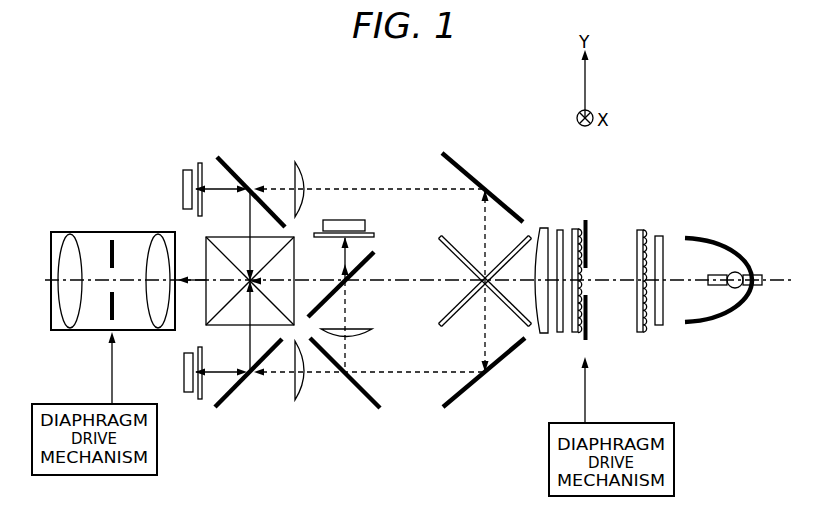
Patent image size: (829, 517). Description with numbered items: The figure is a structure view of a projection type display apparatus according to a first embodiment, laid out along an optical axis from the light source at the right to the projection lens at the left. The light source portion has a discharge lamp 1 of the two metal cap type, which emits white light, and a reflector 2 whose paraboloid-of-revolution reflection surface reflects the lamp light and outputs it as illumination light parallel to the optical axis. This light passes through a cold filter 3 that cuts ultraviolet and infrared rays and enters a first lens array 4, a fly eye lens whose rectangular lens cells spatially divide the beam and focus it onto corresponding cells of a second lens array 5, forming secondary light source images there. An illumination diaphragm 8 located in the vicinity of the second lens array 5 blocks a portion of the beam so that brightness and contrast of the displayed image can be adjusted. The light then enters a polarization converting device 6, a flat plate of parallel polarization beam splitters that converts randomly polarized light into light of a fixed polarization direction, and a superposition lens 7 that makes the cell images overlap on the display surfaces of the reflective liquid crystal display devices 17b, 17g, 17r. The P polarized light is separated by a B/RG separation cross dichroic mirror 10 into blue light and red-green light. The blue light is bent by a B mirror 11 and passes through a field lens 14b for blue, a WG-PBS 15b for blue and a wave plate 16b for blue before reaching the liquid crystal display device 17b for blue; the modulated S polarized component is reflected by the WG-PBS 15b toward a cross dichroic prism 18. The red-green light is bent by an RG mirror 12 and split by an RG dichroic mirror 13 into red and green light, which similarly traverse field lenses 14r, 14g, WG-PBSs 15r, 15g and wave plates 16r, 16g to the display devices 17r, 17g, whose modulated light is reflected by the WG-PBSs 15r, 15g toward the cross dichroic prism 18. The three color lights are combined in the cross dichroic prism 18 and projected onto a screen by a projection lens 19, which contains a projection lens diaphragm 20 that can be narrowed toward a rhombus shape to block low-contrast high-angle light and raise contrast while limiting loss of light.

The discharge lamp 1 is at (740, 272).
The reflector 2 is at (706, 238).
The cold filter 3 is at (660, 236).
The first lens array 4 is at (640, 230).
The second lens array 5 is at (575, 334).
The polarization converting device 6 is at (560, 230).
The superposition lens 7 is at (548, 334).
The illumination diaphragm 8 is at (585, 220).
The B/RG separation cross dichroic mirror 10 is at (444, 241).
The B mirror 11 is at (465, 160).
The RG mirror 12 is at (471, 392).
The RG dichroic mirror 13 is at (367, 397).
The field lens for blue 14b is at (301, 168).
The field lens for green 14g is at (352, 337).
The field lens for red 14r is at (297, 400).
The WG-PBS for blue 15b is at (228, 166).
The WG-PBS for green 15g is at (376, 255).
The WG-PBS for red 15r is at (230, 395).
The wave plate for blue 16b is at (199, 165).
The wave plate for green 16g is at (372, 233).
The wave plate for red 16r is at (200, 400).
The liquid crystal display device for blue 17b is at (183, 190).
The liquid crystal display device for green 17g is at (345, 220).
The liquid crystal display device for red 17r is at (186, 393).
The cross dichroic prism 18 is at (203, 297).
The projection lens 19 is at (88, 333).
The projection lens diaphragm 20 is at (112, 240).